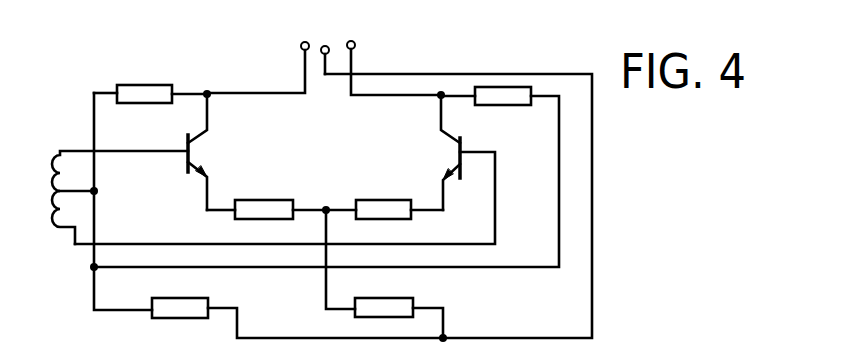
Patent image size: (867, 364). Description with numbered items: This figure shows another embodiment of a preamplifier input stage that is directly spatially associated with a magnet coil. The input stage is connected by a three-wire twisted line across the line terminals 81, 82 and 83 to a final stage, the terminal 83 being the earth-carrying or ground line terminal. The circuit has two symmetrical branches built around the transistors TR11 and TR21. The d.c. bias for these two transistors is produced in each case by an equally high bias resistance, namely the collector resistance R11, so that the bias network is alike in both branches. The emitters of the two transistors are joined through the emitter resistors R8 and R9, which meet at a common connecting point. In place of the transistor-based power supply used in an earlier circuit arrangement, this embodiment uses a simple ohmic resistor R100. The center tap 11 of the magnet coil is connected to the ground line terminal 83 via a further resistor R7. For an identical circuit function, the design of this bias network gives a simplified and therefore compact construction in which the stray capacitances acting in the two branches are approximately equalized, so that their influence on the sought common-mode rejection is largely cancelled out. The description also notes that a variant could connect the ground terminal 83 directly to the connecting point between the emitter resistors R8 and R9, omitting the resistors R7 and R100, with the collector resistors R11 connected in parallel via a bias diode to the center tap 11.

The line terminal 81 is at (300, 44).
The line terminal 82 is at (368, 37).
The earth-carrying or ground line terminal 83 is at (324, 46).
The center tap 11 is at (97, 191).
The collector resistance R11 is at (325, 102).
The transistor TR11 is at (221, 152).
The transistor TR21 is at (429, 152).
The emitter resistor R8 is at (264, 195).
The emitter resistor R9 is at (383, 195).
The further resistor R7 is at (180, 325).
The ohmic resistor R100 is at (403, 296).